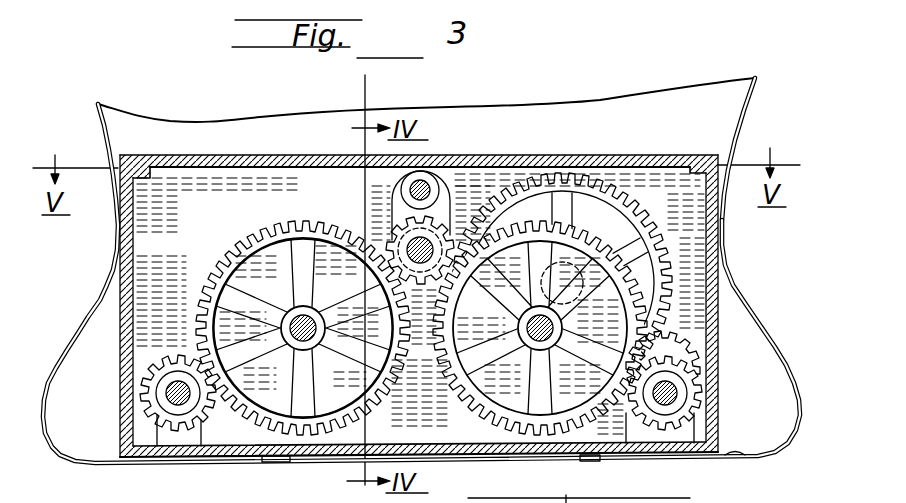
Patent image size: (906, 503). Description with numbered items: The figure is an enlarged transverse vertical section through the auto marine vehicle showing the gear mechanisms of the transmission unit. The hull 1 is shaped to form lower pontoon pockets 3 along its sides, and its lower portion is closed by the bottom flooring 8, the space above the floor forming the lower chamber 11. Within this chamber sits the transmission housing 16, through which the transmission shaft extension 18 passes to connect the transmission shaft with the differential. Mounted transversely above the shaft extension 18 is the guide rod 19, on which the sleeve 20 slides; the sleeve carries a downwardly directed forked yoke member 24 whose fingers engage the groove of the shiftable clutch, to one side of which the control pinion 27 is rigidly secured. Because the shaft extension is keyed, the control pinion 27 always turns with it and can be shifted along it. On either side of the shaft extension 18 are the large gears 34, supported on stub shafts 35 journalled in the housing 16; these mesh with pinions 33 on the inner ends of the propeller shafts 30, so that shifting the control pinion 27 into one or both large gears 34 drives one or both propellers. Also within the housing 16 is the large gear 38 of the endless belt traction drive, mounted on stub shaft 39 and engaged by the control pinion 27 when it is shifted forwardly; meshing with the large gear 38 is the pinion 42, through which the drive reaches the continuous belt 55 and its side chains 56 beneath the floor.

The hull 1 is at (694, 58).
The lower pontoon pockets 3 is at (737, 302).
The bottom flooring 8 is at (725, 456).
The lower chamber 11 is at (718, 126).
The transmission unit housing 16 is at (200, 167).
The transmission shaft extension 18 is at (395, 246).
The guide rod 19 is at (425, 189).
The sleeve 20 is at (433, 193).
The forked yoke member 24 is at (398, 207).
The control pinion 27 is at (453, 235).
The propeller shafts 30 is at (672, 394).
The pinions 33 is at (697, 357).
The large gears 34 is at (595, 278).
The stub shafts 35 is at (228, 290).
The large gear 38 is at (628, 218).
The stub shaft 39 is at (562, 282).
The pinion 42 is at (677, 343).
The continuous belt 55 is at (483, 462).
The continuous chains 56 is at (265, 461).